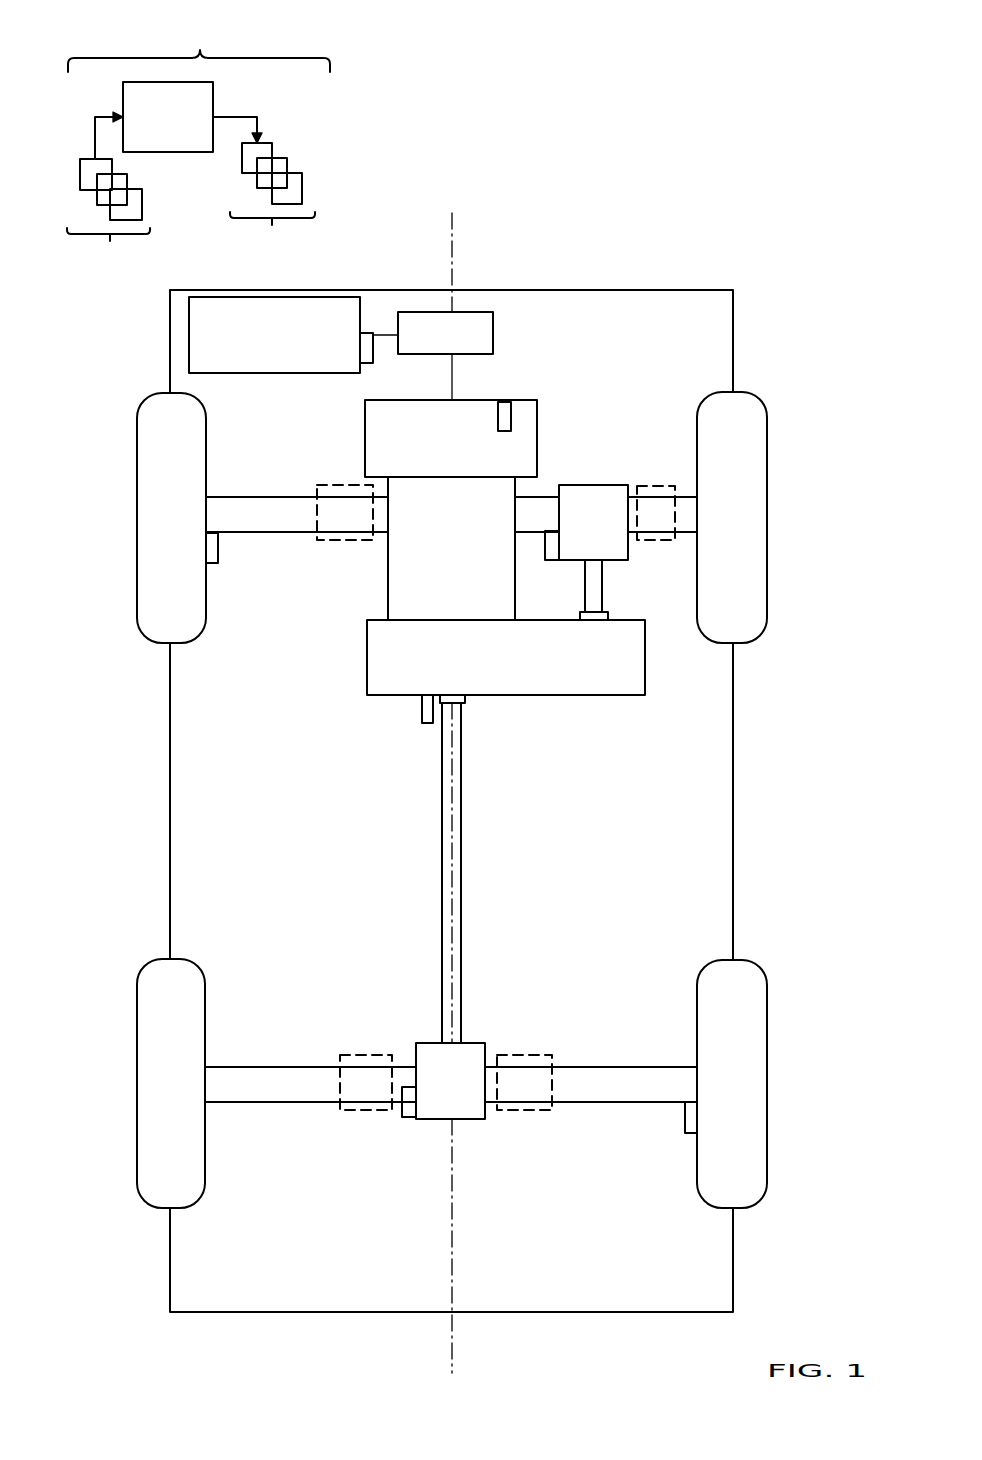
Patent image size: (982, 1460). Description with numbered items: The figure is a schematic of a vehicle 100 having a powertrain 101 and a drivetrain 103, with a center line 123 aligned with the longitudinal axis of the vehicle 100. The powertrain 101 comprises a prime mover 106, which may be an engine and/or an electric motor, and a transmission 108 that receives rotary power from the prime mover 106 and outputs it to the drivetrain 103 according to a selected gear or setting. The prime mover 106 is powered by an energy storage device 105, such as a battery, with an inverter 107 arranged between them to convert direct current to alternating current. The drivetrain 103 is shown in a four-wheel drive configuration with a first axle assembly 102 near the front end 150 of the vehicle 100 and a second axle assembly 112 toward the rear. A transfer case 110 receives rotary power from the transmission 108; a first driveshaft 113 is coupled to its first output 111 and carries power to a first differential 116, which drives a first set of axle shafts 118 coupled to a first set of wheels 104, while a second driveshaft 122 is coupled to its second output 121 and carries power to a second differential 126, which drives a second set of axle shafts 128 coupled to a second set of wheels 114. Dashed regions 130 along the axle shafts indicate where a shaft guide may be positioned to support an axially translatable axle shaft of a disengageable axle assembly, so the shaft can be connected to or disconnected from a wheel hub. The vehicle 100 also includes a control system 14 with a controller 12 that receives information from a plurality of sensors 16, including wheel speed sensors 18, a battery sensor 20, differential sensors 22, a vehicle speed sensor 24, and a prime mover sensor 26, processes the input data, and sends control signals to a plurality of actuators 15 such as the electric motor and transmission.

The controller 12 is at (168, 117).
The control system 14 is at (198, 145).
The actuators 15 is at (272, 205).
The sensors 16 is at (108, 222).
The wheel speed sensors 18 is at (218, 564).
The battery sensor 20 is at (374, 357).
The differential sensors 22 is at (548, 561).
The vehicle speed sensor 24 is at (422, 724).
The prime mover sensor 26 is at (504, 432).
The vehicle 100 is at (740, 70).
The powertrain 101 is at (562, 355).
The first axle assembly 102 is at (579, 449).
The drivetrain 103 is at (328, 569).
The first set of wheels 104 is at (147, 398).
The energy storage device 105 is at (261, 345).
The prime mover 106 is at (437, 449).
The inverter 107 is at (432, 344).
The transmission 108 is at (437, 558).
The transfer case 110 is at (491, 668).
The first output 111 is at (609, 617).
The second axle assembly 112 is at (522, 1002).
The first driveshaft 113 is at (604, 596).
The second set of wheels 114 is at (148, 963).
The first differential 116 is at (579, 532).
The first set of axle shafts 118 is at (240, 497).
The second output 121 is at (466, 700).
The second driveshaft 122 is at (461, 903).
The center line 123 is at (458, 1325).
The second differential 126 is at (436, 1091).
The second set of axle shafts 128 is at (632, 1067).
The dashed regions 130 is at (330, 485).
The front end 150 is at (504, 256).